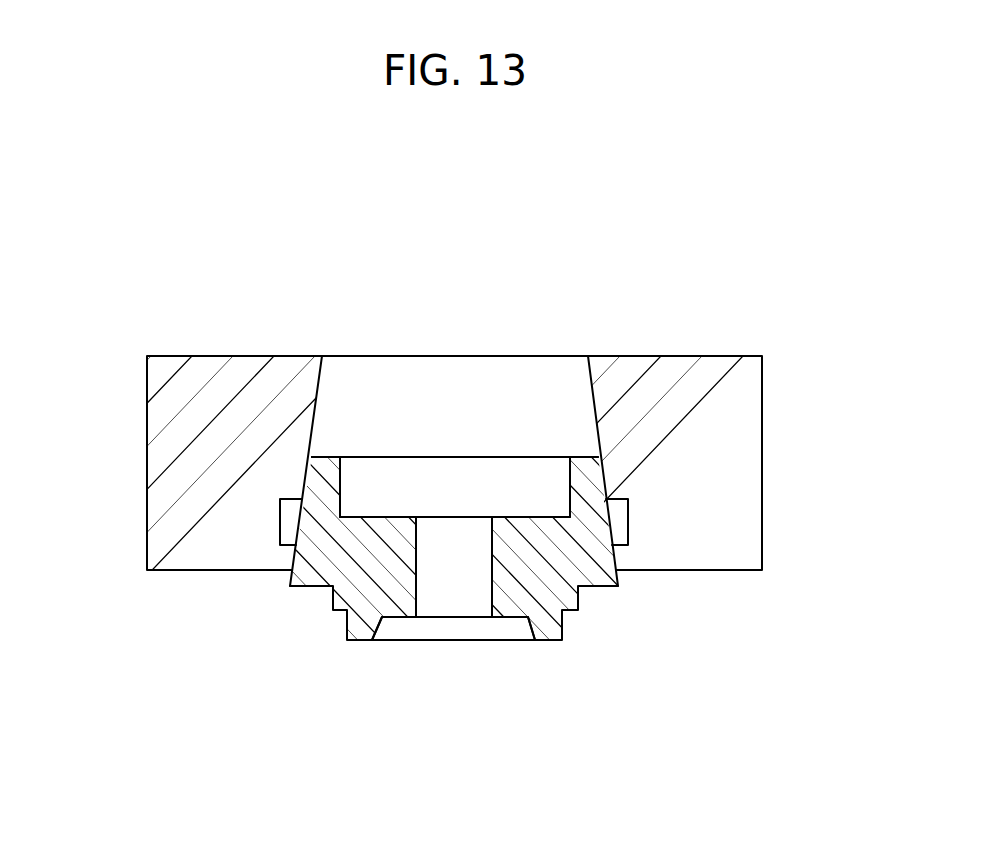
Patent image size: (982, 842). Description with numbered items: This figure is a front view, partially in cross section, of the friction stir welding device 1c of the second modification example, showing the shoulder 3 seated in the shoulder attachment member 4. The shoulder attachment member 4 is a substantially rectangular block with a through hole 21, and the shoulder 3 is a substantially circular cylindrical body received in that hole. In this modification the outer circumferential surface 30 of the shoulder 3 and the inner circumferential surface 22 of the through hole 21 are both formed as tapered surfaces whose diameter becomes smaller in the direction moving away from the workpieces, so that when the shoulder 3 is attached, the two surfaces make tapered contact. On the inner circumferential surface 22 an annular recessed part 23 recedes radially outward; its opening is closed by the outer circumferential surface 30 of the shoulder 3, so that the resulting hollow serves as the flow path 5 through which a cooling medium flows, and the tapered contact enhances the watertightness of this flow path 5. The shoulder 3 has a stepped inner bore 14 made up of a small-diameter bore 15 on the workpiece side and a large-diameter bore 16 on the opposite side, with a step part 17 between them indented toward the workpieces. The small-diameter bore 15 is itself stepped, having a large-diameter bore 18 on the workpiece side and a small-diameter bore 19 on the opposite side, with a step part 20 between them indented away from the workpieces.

The friction stir welding device 1c is at (662, 236).
The shoulder attachment member 4 is at (163, 400).
The through hole 21 is at (478, 387).
The inner circumferential surface 22 is at (590, 372).
The shoulder 3 is at (323, 557).
The large-diameter bore 16 is at (343, 473).
The outer circumferential surface 30 is at (605, 477).
The step part 17 is at (383, 517).
The flow path 5 is at (287, 516).
The recessed part 23 is at (626, 508).
The inner bore 14 is at (463, 593).
The small-diameter bore 15 is at (423, 572).
The small-diameter bore 19 is at (488, 583).
The large-diameter bore 18 is at (378, 632).
The step part 20 is at (512, 620).